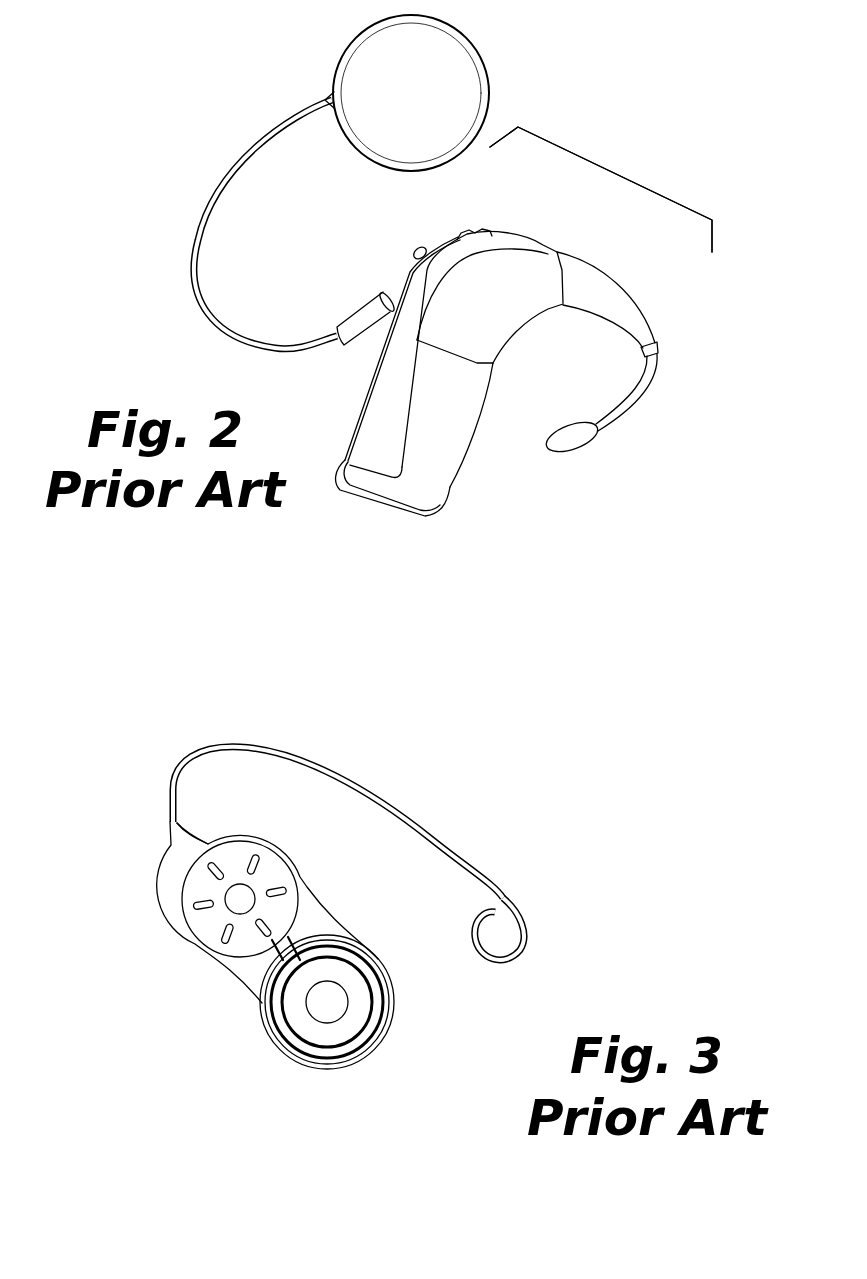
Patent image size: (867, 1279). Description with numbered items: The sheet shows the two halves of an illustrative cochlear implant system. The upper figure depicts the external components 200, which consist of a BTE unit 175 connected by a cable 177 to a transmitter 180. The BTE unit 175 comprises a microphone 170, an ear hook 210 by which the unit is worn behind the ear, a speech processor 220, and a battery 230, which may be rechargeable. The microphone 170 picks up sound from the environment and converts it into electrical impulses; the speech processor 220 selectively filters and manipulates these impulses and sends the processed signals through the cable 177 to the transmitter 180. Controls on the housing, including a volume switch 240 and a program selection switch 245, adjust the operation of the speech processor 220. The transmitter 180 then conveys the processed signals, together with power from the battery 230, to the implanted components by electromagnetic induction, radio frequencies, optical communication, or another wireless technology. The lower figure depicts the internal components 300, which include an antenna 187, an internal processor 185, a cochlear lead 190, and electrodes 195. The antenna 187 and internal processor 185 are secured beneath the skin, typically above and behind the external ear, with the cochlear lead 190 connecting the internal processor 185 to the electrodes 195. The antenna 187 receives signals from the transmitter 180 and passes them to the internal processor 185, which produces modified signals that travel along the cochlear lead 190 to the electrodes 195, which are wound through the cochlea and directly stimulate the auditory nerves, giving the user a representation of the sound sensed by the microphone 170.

In FIG. 2, the microphone 170 is at (597, 442).
In FIG. 2, the BTE unit 175 is at (601, 184).
In FIG. 2, the cable 177 is at (243, 166).
In FIG. 2, the transmitter 180 is at (482, 64).
In FIG. 2, the external components 200 is at (158, 265).
In FIG. 2, the ear hook 210 is at (588, 262).
In FIG. 2, the speech processor 220 is at (511, 339).
In FIG. 2, the battery 230 is at (451, 487).
In FIG. 2, the volume switch 240 is at (489, 231).
In FIG. 2, the program selection switch 245 is at (415, 248).
In FIG. 3, the internal components 300 is at (505, 808).
In FIG. 3, the internal processor 185 is at (193, 938).
In FIG. 3, the antenna 187 is at (268, 1040).
In FIG. 3, the cochlear lead 190 is at (427, 834).
In FIG. 3, the electrodes 195 is at (492, 964).